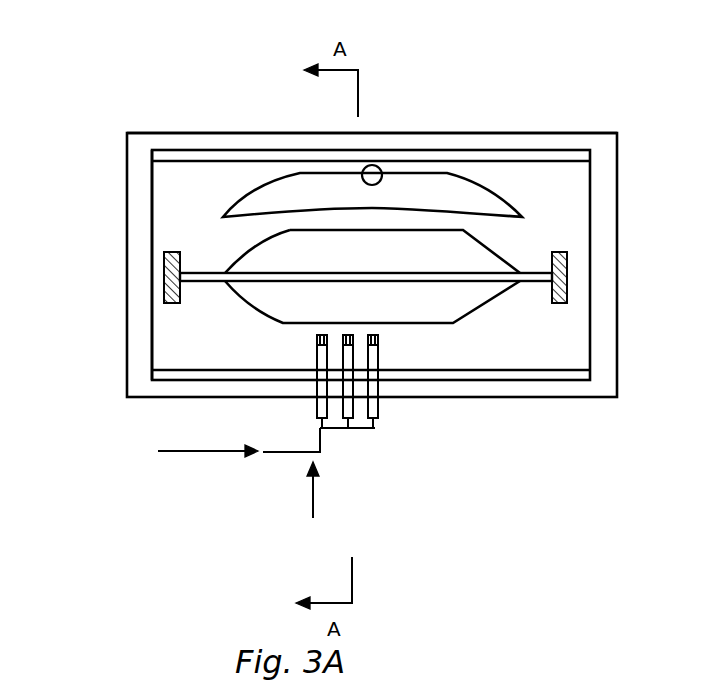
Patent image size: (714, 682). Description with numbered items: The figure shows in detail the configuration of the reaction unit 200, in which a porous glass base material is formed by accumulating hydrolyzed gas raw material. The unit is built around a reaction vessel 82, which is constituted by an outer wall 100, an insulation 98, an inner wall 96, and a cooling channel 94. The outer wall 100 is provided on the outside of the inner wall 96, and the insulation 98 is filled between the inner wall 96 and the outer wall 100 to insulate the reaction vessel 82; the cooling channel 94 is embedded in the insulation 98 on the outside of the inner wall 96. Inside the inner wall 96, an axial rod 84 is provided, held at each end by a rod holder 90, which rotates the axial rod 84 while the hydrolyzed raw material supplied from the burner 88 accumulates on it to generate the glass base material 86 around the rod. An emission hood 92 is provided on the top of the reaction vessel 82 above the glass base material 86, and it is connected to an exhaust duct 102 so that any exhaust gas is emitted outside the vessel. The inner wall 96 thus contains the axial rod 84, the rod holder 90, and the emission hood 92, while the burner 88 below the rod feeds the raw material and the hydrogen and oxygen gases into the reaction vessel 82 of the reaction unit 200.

The reaction unit 200 is at (258, 36).
The reaction vessel 82 is at (626, 258).
The axial rod 84 is at (537, 281).
The glass base material 86 is at (463, 307).
The burner 88 is at (378, 412).
The rod holder 90 is at (553, 252).
The emission hood 92 is at (406, 173).
The cooling channel 94 is at (152, 161).
The inner wall 96 is at (152, 197).
The insulation 98 is at (157, 137).
The outer wall 100 is at (127, 313).
The exhaust duct 102 is at (372, 165).